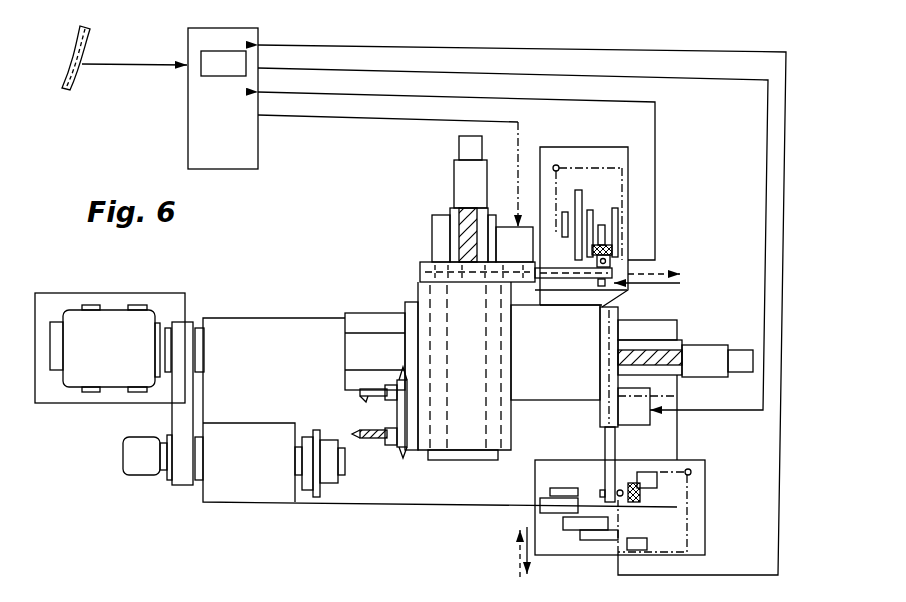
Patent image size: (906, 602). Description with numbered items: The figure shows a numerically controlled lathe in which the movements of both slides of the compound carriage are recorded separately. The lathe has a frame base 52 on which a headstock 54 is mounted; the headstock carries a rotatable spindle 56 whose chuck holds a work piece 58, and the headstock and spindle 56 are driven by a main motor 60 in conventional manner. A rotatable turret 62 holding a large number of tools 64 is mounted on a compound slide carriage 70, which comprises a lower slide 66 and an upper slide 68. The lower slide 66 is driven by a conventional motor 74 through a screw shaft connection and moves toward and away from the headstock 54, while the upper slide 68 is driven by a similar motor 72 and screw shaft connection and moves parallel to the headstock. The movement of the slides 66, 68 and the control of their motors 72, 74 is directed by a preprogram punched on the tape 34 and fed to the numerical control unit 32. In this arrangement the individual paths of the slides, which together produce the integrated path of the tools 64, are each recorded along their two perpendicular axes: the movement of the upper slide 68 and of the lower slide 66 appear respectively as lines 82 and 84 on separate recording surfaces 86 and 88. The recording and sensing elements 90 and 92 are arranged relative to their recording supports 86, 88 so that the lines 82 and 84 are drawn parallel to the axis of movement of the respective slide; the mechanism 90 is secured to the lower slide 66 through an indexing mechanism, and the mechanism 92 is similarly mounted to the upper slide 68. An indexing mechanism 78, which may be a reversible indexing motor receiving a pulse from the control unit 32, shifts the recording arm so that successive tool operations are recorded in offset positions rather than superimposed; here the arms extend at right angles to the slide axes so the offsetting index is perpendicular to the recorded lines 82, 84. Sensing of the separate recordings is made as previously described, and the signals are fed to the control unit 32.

The numerical control unit 32 is at (198, 103).
The tape 34 is at (88, 40).
The frame base 52 is at (237, 318).
The headstock 54 is at (227, 483).
The spindle 56 is at (302, 443).
The work piece 58 is at (330, 475).
The main motor 60 is at (85, 368).
The rotatable turret 62 is at (392, 448).
The tools 64 is at (355, 431).
The lower slide 66 is at (533, 400).
The upper slide 68 is at (440, 298).
The compound slide carriage 70 is at (400, 305).
The motor 72 is at (465, 180).
The motor 74 is at (700, 355).
The indexing mechanism 78 is at (512, 233).
The line 82 is at (617, 217).
The line 84 is at (580, 530).
The recording surface 86 is at (705, 547).
The recording surface 88 is at (620, 158).
The recording and sensing mechanism 90 is at (625, 503).
The recording and sensing mechanism 92 is at (625, 285).